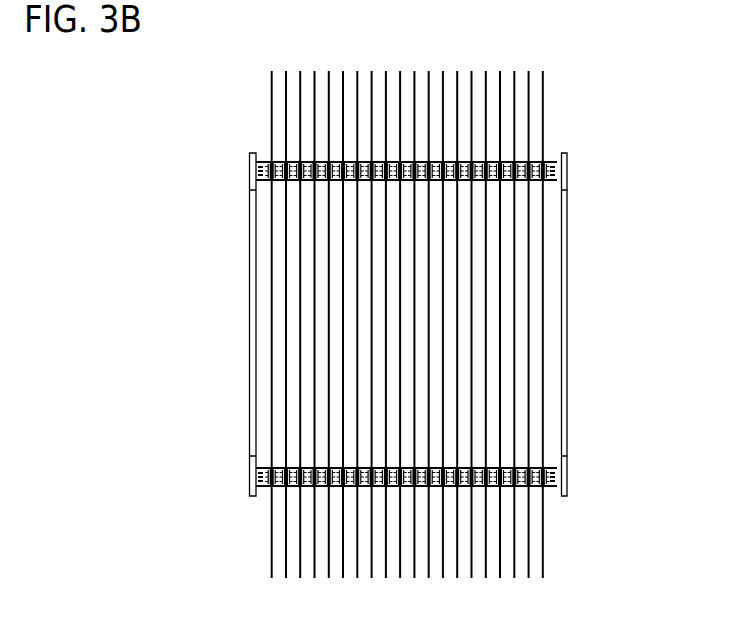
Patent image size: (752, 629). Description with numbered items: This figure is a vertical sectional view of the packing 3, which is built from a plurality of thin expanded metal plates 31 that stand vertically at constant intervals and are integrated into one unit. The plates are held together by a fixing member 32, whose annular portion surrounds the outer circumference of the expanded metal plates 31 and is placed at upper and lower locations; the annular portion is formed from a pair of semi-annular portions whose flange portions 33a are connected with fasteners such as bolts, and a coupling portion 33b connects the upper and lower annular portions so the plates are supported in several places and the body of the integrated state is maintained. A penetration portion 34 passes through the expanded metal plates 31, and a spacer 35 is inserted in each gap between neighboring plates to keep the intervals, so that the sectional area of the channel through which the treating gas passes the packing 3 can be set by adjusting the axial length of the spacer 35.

The packing 3 is at (205, 138).
The expanded metal plate 31 is at (544, 97).
The fixing member 32 is at (582, 255).
The flange portion 33a is at (567, 173).
The coupling portion 33b is at (567, 332).
The penetration portion 34 is at (257, 161).
The spacer 35 is at (551, 162).